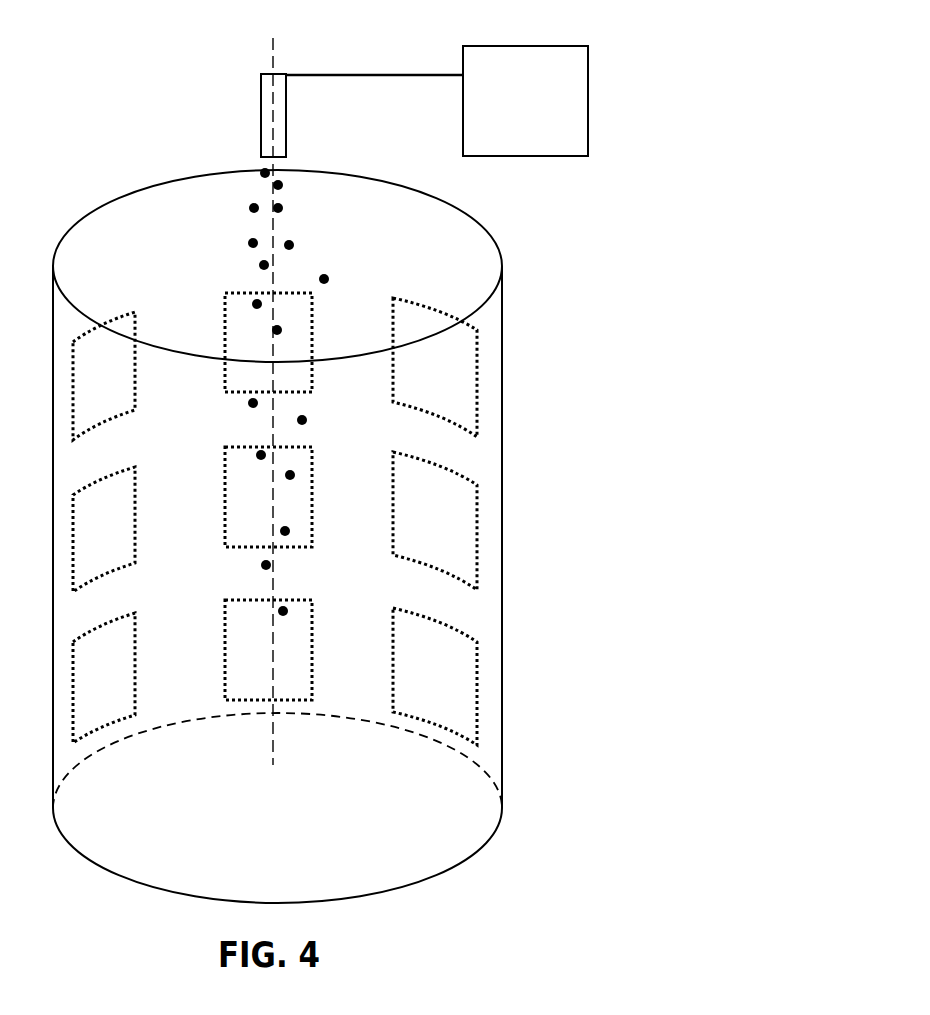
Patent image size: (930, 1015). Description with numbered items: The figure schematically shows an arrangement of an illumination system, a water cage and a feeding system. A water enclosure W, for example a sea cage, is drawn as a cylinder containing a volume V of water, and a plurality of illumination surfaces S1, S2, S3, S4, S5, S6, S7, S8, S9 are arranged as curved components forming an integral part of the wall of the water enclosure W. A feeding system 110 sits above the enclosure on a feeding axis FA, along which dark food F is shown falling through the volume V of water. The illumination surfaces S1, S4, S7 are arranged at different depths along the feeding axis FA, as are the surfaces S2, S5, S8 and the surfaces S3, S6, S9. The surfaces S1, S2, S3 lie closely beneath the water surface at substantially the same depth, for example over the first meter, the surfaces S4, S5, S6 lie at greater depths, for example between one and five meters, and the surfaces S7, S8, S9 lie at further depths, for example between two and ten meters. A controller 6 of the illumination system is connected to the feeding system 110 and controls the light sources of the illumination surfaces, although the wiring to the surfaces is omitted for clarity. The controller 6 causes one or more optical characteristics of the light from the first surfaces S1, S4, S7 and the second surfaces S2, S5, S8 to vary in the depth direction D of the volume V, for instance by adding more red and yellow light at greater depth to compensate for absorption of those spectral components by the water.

The controller 6 is at (536, 120).
The feeding system 110 is at (261, 108).
The feeding axis FA is at (273, 40).
The food F is at (283, 208).
The depth direction D is at (542, 345).
The water enclosure W is at (503, 612).
The volume of water V is at (358, 589).
The illumination surface S1 is at (115, 381).
The illumination surface S2 is at (265, 369).
The illumination surface S3 is at (448, 394).
The illumination surface S4 is at (115, 544).
The illumination surface S5 is at (266, 521).
The illumination surface S6 is at (448, 547).
The illumination surface S7 is at (115, 701).
The illumination surface S8 is at (265, 677).
The illumination surface S9 is at (448, 701).